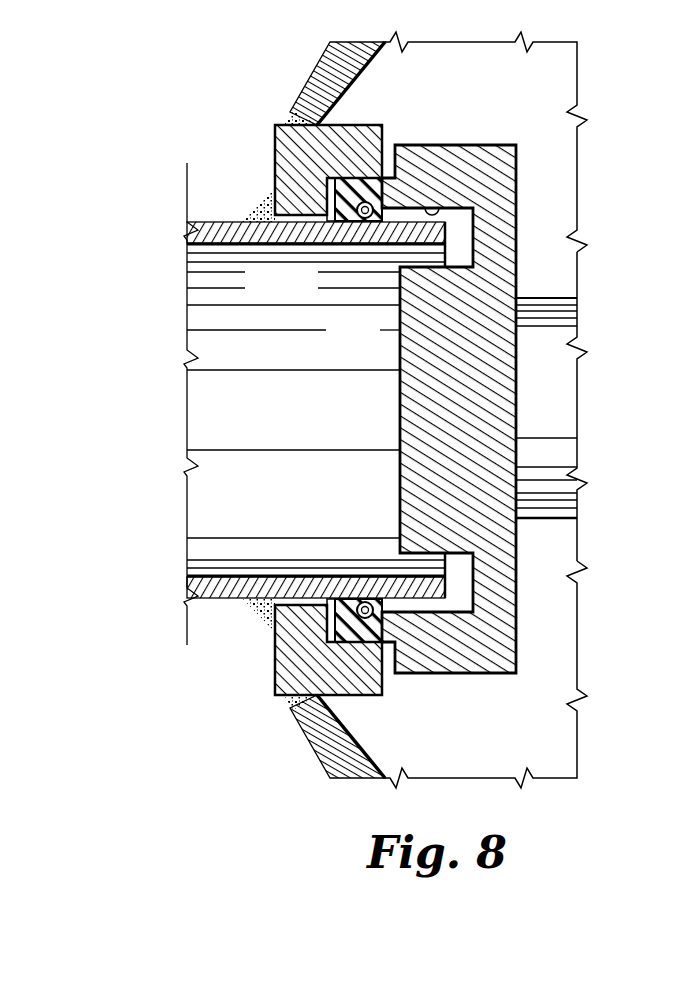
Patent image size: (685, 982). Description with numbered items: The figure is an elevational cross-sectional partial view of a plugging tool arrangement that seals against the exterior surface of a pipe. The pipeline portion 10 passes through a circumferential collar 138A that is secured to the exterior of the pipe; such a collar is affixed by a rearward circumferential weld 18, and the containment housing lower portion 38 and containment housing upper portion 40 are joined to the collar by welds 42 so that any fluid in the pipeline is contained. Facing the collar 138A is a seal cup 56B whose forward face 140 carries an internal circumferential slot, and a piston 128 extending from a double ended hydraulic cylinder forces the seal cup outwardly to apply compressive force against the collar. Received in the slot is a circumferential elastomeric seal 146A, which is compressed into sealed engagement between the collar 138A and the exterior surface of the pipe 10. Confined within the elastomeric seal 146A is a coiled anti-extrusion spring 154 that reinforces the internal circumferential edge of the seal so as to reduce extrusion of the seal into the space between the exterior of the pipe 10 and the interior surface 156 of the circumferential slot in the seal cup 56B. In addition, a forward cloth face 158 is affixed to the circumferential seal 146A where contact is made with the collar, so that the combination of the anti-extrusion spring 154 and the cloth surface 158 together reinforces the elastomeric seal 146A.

The pipeline portion 10 is at (213, 232).
The rearward circumferential weld 18 is at (265, 620).
The containment housing lower portion 38 is at (332, 740).
The containment housing upper portion 40 is at (326, 80).
The weld 42 is at (291, 120).
The seal cup 56B is at (518, 284).
The piston 128 is at (548, 388).
The collar 138A is at (297, 157).
The forward face 140 is at (398, 395).
The circumferential elastomeric seal 146A is at (343, 218).
The anti-extrusion spring 154 is at (364, 222).
The interior surface 156 is at (440, 207).
The forward cloth face 158 is at (330, 197).